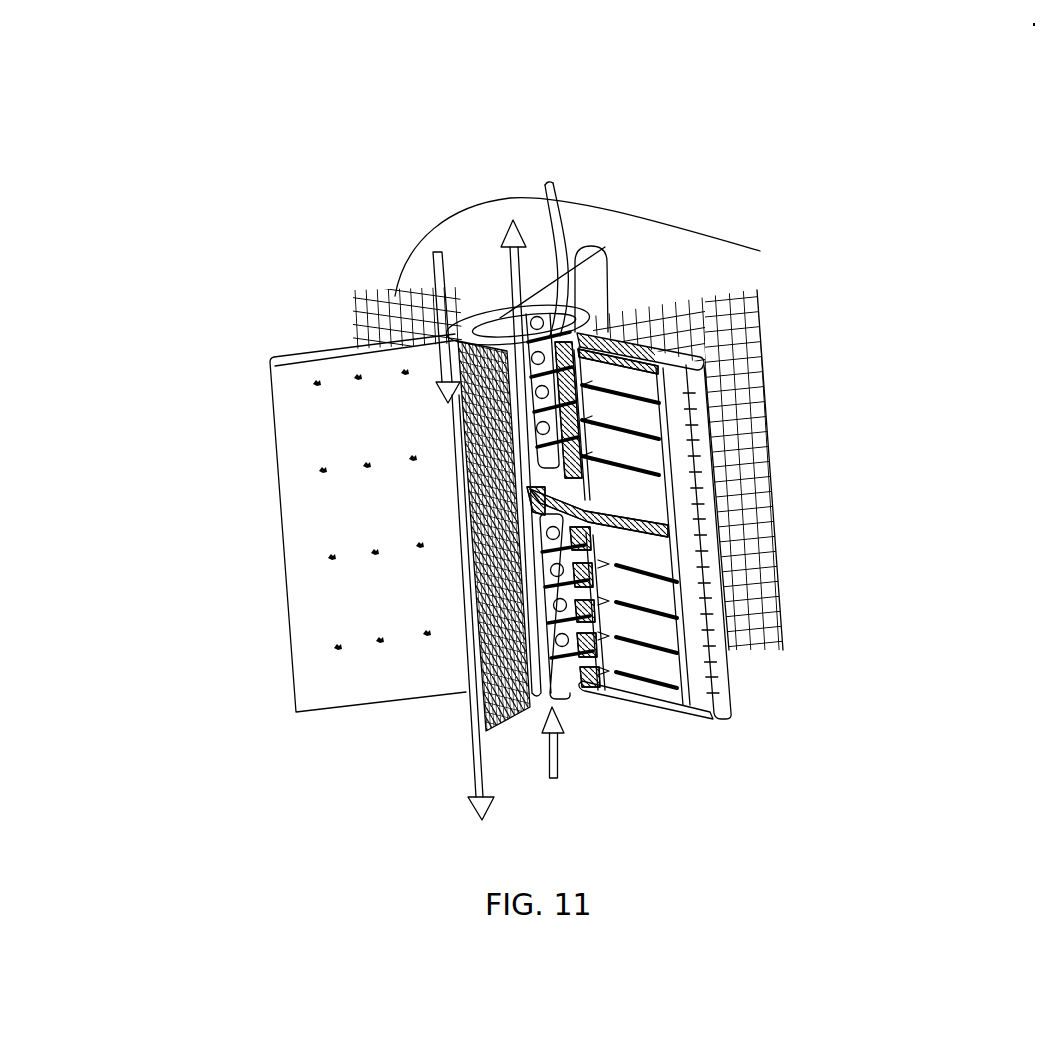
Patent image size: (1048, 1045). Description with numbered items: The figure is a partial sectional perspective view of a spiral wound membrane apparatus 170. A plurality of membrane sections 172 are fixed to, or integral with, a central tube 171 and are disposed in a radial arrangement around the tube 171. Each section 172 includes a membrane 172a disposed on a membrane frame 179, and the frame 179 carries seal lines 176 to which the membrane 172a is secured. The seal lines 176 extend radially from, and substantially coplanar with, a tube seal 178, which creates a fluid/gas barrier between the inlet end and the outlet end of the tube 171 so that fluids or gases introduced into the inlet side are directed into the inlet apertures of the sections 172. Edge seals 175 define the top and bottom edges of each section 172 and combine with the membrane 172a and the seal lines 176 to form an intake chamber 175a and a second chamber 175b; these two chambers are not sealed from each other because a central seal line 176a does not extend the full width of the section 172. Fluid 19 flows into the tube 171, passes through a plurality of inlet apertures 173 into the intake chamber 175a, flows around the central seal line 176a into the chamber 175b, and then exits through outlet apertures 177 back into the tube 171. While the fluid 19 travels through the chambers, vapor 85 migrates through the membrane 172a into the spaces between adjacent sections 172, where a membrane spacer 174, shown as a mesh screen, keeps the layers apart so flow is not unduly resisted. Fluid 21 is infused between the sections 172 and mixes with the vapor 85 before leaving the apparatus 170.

The spiral wound membrane apparatus 170 is at (697, 178).
The central tube 171 is at (490, 317).
The outlet apertures 177 is at (551, 244).
The fluid 21 is at (440, 287).
The edge seals 175 is at (538, 321).
The seal lines 176 is at (690, 340).
The chamber 175b is at (652, 425).
The membrane spacer 174 is at (768, 412).
The membrane frame 179 is at (655, 492).
The central seal line 176a is at (690, 524).
The tube seal 178 is at (528, 488).
The vapor 85 is at (335, 650).
The intake chamber 175a is at (662, 626).
The membrane 172a is at (716, 664).
The membrane sections 172 is at (735, 696).
The fluid 19 is at (556, 750).
The inlet apertures 173 is at (602, 600).